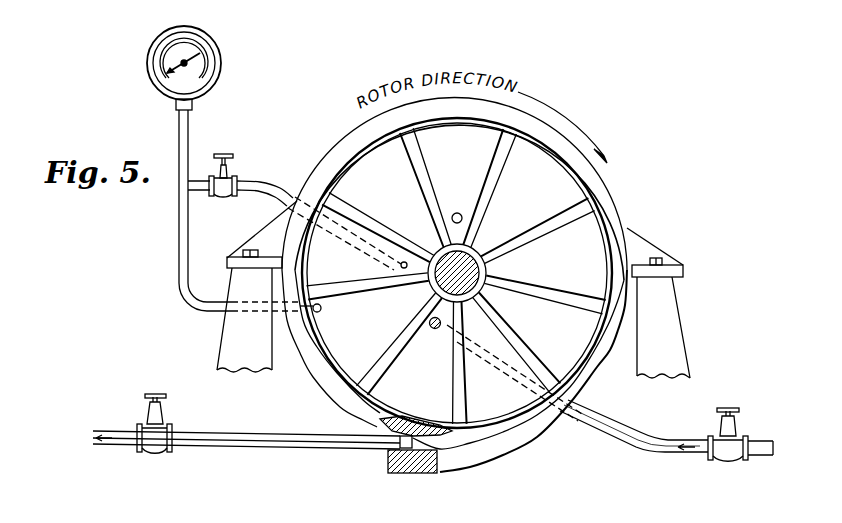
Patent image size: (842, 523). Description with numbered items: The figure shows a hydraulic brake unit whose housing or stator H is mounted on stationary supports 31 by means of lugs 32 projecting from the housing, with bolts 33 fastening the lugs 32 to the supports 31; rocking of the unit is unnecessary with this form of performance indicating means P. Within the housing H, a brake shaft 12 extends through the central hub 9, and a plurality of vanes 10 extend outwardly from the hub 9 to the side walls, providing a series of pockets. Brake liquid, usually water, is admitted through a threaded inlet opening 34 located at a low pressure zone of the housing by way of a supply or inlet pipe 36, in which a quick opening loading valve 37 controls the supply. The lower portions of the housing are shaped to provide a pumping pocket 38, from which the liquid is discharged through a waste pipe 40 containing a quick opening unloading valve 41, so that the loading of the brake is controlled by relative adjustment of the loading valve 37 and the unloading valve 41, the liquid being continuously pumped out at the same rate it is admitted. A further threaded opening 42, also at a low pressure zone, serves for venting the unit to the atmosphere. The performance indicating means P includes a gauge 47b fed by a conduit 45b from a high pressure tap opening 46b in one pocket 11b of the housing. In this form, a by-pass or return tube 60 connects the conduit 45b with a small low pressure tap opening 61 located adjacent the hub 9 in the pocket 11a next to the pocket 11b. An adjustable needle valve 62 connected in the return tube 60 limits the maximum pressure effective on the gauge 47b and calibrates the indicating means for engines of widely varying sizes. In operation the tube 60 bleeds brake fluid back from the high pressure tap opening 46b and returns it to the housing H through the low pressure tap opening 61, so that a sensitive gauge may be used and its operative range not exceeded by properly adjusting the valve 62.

The central hub 9 is at (432, 244).
The vanes 10 is at (412, 184).
The pocket 11a is at (300, 262).
The pocket 11b is at (331, 364).
The brake shaft 12 is at (473, 253).
The stationary supports 31 is at (218, 340).
The lugs 32 is at (226, 265).
The bolts 33 is at (250, 250).
The threaded inlet opening 34 is at (434, 329).
The supply or inlet pipe 36 is at (620, 428).
The quick opening loading valve 37 is at (735, 410).
The pumping pocket 38 is at (415, 474).
The waste pipe 40 is at (281, 433).
The quick opening unloading valve 41 is at (150, 398).
The threaded opening 42 is at (458, 212).
The conduit 45b is at (189, 125).
The high pressure tap opening 46b is at (320, 310).
The gauge 47b is at (150, 68).
The by-pass or return tube 60 is at (262, 180).
The low pressure tap opening 61 is at (401, 266).
The adjustable needle valve 62 is at (222, 197).
The housing or stator H is at (549, 440).
The performance indicating means P is at (228, 71).